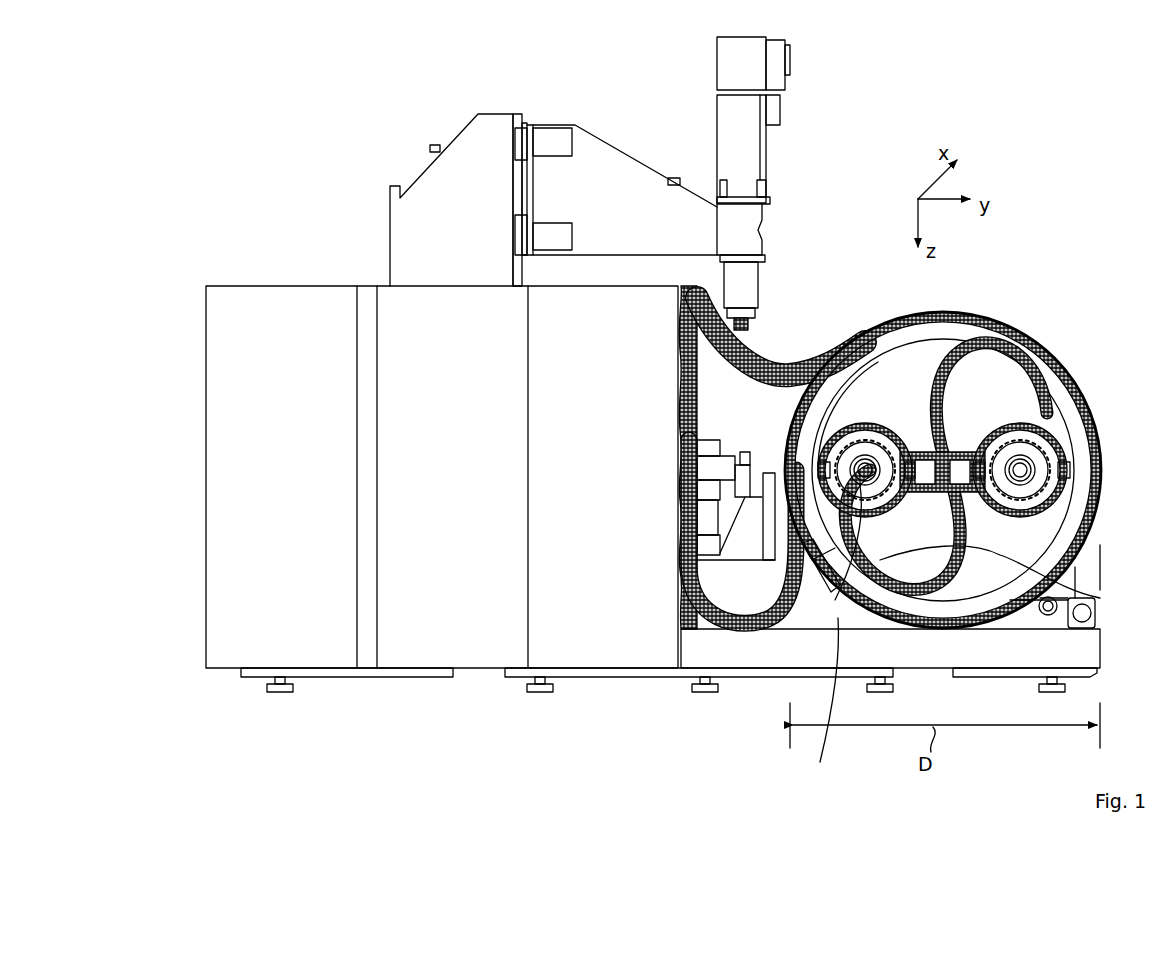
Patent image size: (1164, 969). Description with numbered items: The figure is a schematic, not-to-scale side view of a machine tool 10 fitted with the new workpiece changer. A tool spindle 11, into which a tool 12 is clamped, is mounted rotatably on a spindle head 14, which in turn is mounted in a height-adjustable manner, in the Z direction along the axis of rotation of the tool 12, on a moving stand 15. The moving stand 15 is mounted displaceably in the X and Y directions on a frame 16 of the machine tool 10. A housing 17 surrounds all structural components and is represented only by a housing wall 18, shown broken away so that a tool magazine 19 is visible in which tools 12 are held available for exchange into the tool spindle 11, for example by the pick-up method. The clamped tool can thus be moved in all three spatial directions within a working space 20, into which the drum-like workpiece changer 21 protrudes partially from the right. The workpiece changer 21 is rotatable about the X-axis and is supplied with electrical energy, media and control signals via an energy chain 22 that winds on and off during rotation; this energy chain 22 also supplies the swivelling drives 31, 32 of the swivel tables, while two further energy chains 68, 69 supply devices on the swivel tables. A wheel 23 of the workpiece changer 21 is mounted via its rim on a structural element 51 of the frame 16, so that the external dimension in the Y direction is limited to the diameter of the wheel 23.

The machine tool 10 is at (1068, 214).
The tool spindle 11 is at (745, 158).
The tool 12 is at (745, 288).
The spindle head 14 is at (587, 173).
The moving stand 15 is at (425, 234).
The frame 16 is at (707, 652).
The housing 17 is at (247, 562).
The housing wall 18 is at (602, 503).
The tool magazine 19 is at (724, 440).
The working space 20 is at (787, 408).
The workpiece changer 21 is at (1090, 348).
The energy chain 22 is at (745, 620).
The wheel 23 is at (1040, 527).
The swivelling drive 31 is at (1035, 473).
The swivelling drive 32 is at (792, 598).
The structural element 51 is at (824, 703).
The energy chain 68 is at (1045, 412).
The energy chain 69 is at (1088, 571).